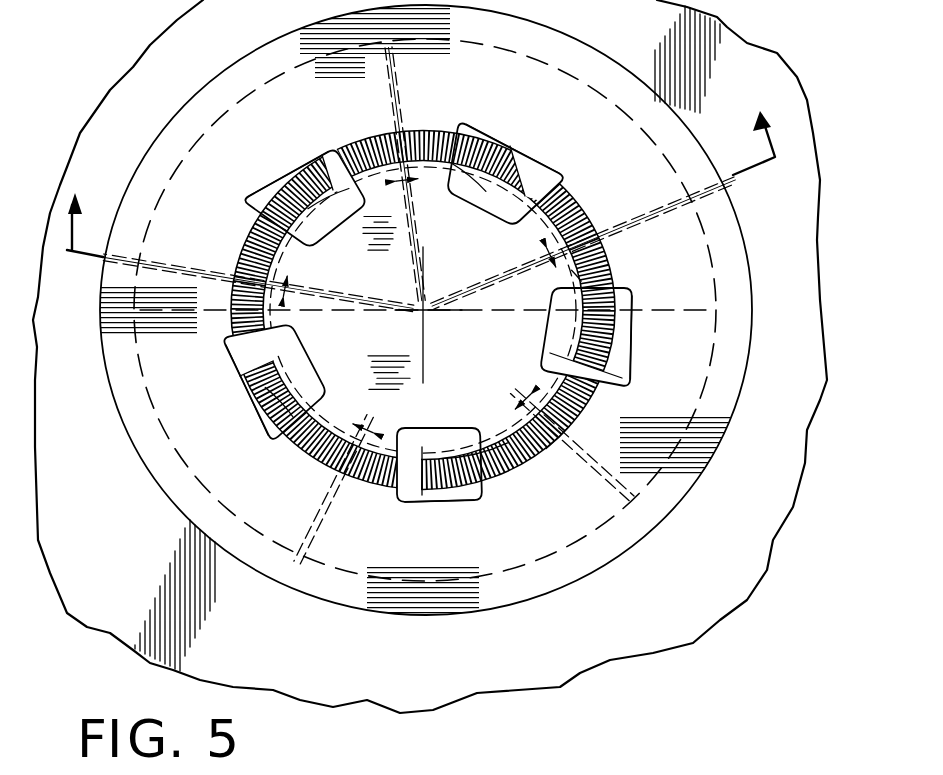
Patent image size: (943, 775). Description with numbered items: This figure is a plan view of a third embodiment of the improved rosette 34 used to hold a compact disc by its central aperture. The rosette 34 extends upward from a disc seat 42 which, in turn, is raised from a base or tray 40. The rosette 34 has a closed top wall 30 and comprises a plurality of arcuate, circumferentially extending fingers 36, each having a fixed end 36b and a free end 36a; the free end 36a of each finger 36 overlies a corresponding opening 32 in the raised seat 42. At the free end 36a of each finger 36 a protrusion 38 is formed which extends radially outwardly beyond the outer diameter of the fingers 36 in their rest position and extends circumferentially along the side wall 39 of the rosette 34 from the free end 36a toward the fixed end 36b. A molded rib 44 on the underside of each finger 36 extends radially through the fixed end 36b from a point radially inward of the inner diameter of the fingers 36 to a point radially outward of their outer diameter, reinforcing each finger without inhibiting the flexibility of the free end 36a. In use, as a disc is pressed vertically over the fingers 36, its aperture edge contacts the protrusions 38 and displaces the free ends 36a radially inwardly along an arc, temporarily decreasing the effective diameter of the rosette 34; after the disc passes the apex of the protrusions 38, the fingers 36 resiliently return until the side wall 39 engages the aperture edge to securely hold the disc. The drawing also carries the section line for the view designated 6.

The section line 6- 6 is at (425, 176).
The closed top wall 30 is at (465, 348).
The opening 32 is at (317, 160).
The rosette 34 is at (205, 324).
The finger 36 is at (497, 128).
The free end 36a is at (357, 130).
The fixed end 36b is at (507, 97).
The protrusion 38 is at (523, 143).
The side wall 39 is at (546, 432).
The base or tray 40 is at (693, 560).
The disc seat 42 is at (748, 383).
The rib 44 is at (622, 231).